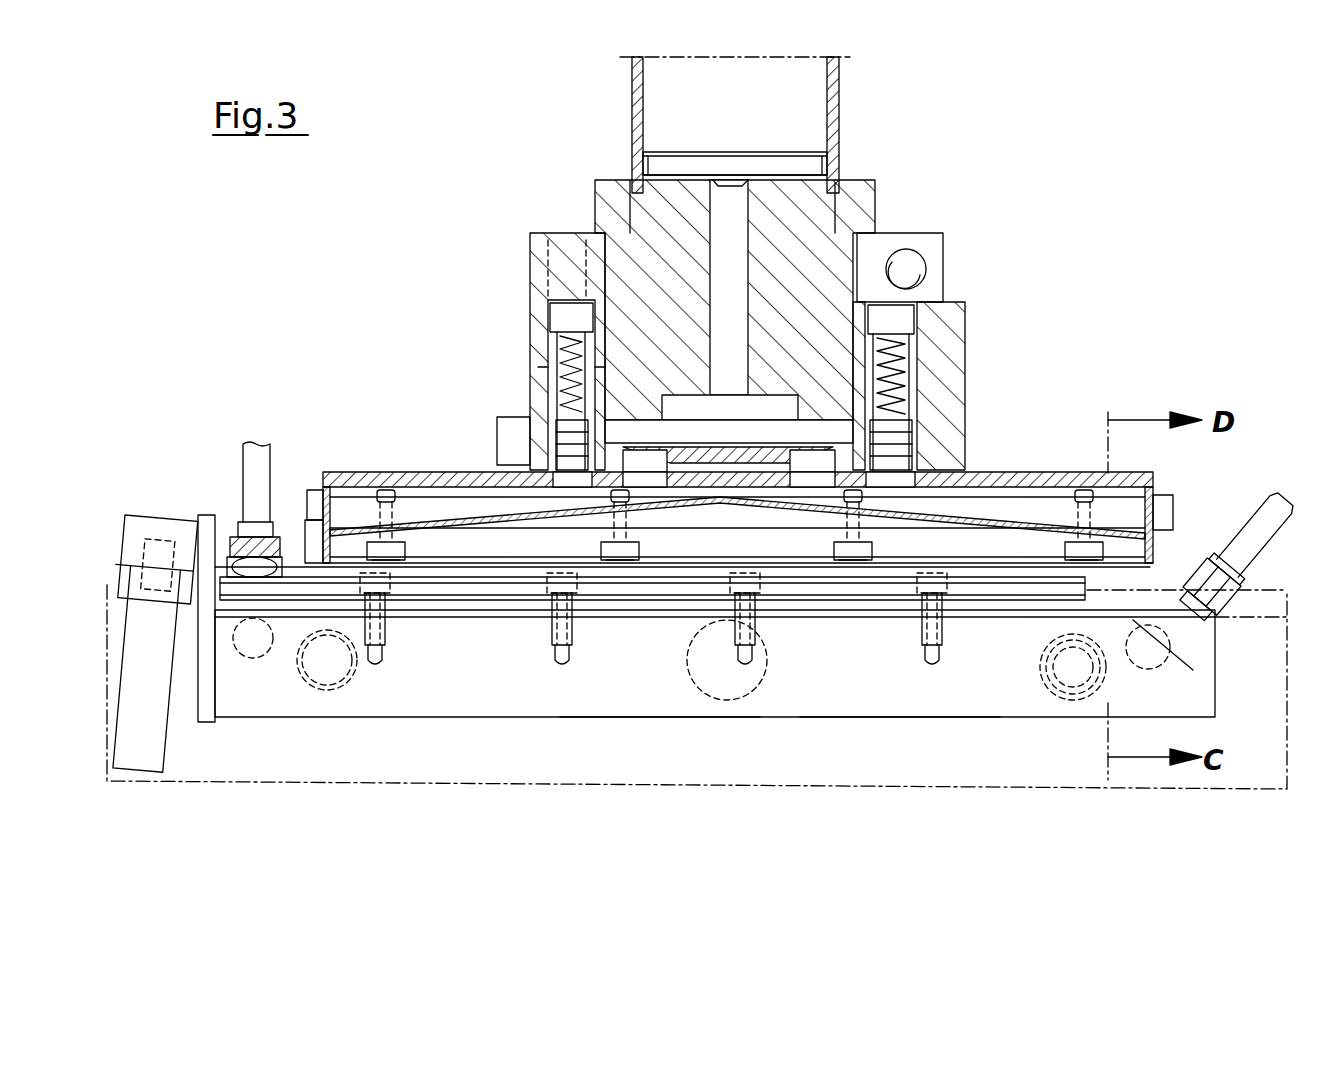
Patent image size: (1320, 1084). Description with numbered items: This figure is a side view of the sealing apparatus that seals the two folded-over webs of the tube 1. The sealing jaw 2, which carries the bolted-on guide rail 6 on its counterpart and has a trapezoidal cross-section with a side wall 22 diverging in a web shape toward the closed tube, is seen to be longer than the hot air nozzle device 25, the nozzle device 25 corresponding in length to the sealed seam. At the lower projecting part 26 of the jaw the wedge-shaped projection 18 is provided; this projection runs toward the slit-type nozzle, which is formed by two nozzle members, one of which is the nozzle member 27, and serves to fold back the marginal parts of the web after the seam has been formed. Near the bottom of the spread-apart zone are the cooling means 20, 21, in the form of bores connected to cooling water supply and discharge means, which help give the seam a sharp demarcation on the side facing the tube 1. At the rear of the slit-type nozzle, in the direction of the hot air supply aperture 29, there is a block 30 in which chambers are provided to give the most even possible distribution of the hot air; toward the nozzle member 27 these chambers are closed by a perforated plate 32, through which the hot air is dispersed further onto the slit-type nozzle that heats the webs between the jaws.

The tube 1 is at (634, 764).
The sealing jaw 2 is at (897, 693).
The guide rail 6 is at (652, 468).
The wedge-shaped projection 18 is at (1220, 606).
The cooling means 20 is at (253, 468).
The cooling means 21 is at (1262, 537).
The side wall 22 is at (429, 697).
The hot air nozzle device 25 is at (985, 355).
The lower projecting part 26 is at (1200, 677).
The nozzle member 27 is at (355, 547).
The hot air supply aperture 29 is at (840, 95).
The block 30 is at (462, 477).
The perforated plate 32 is at (737, 439).